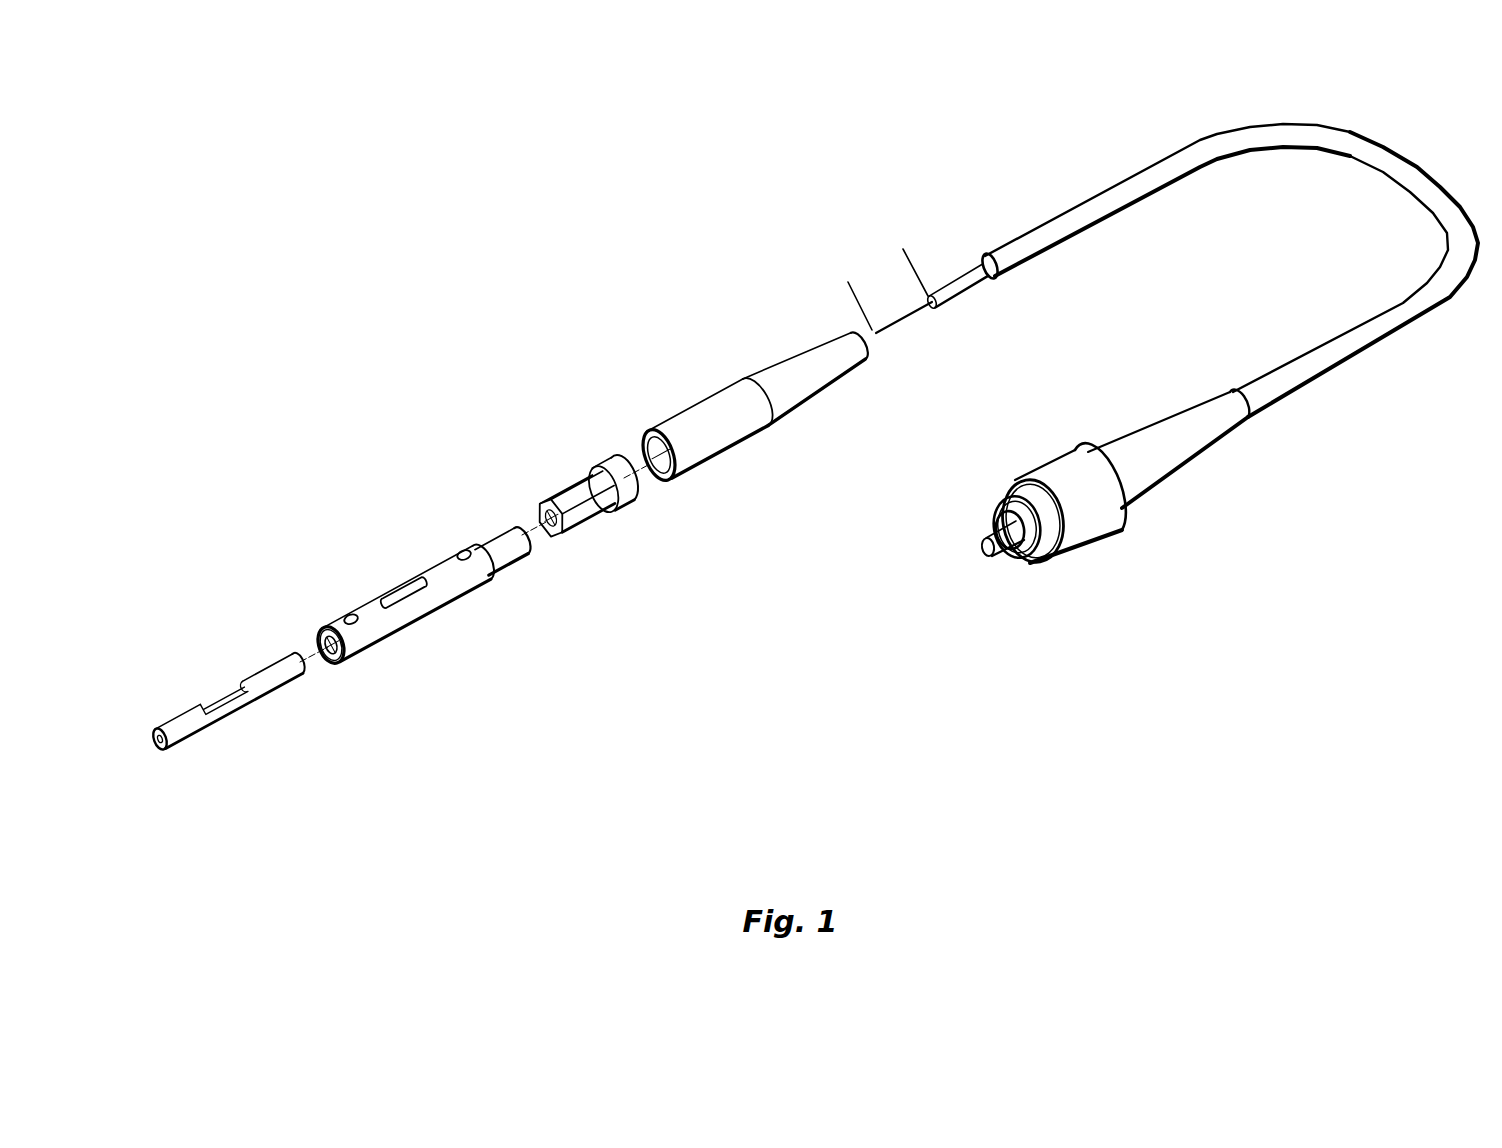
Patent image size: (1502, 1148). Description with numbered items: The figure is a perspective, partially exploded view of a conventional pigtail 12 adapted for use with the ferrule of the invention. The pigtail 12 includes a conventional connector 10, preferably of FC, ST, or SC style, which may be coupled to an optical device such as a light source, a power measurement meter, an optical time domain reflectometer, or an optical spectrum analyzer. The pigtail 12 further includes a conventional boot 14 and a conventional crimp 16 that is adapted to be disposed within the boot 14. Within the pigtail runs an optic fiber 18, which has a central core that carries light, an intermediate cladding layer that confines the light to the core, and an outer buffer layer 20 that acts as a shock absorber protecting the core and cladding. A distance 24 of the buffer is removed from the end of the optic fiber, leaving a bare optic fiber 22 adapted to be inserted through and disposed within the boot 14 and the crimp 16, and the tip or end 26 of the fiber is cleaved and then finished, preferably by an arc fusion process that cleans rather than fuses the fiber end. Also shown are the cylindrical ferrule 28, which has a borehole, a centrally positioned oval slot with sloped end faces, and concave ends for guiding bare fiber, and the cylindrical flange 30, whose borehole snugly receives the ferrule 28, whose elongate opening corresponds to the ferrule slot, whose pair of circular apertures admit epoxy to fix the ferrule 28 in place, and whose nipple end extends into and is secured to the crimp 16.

The connector 10 is at (1165, 488).
The pigtail 12 is at (1350, 370).
The boot 14 is at (739, 407).
The crimp 16 is at (597, 524).
The optic fiber 18 is at (966, 267).
The buffer layer 20 is at (970, 295).
The optical fiber 22 is at (898, 338).
The distance 24 is at (851, 293).
The tip or end of the optic fiber 26 is at (858, 331).
The ferrule 28 is at (198, 748).
The flange 30 is at (428, 623).